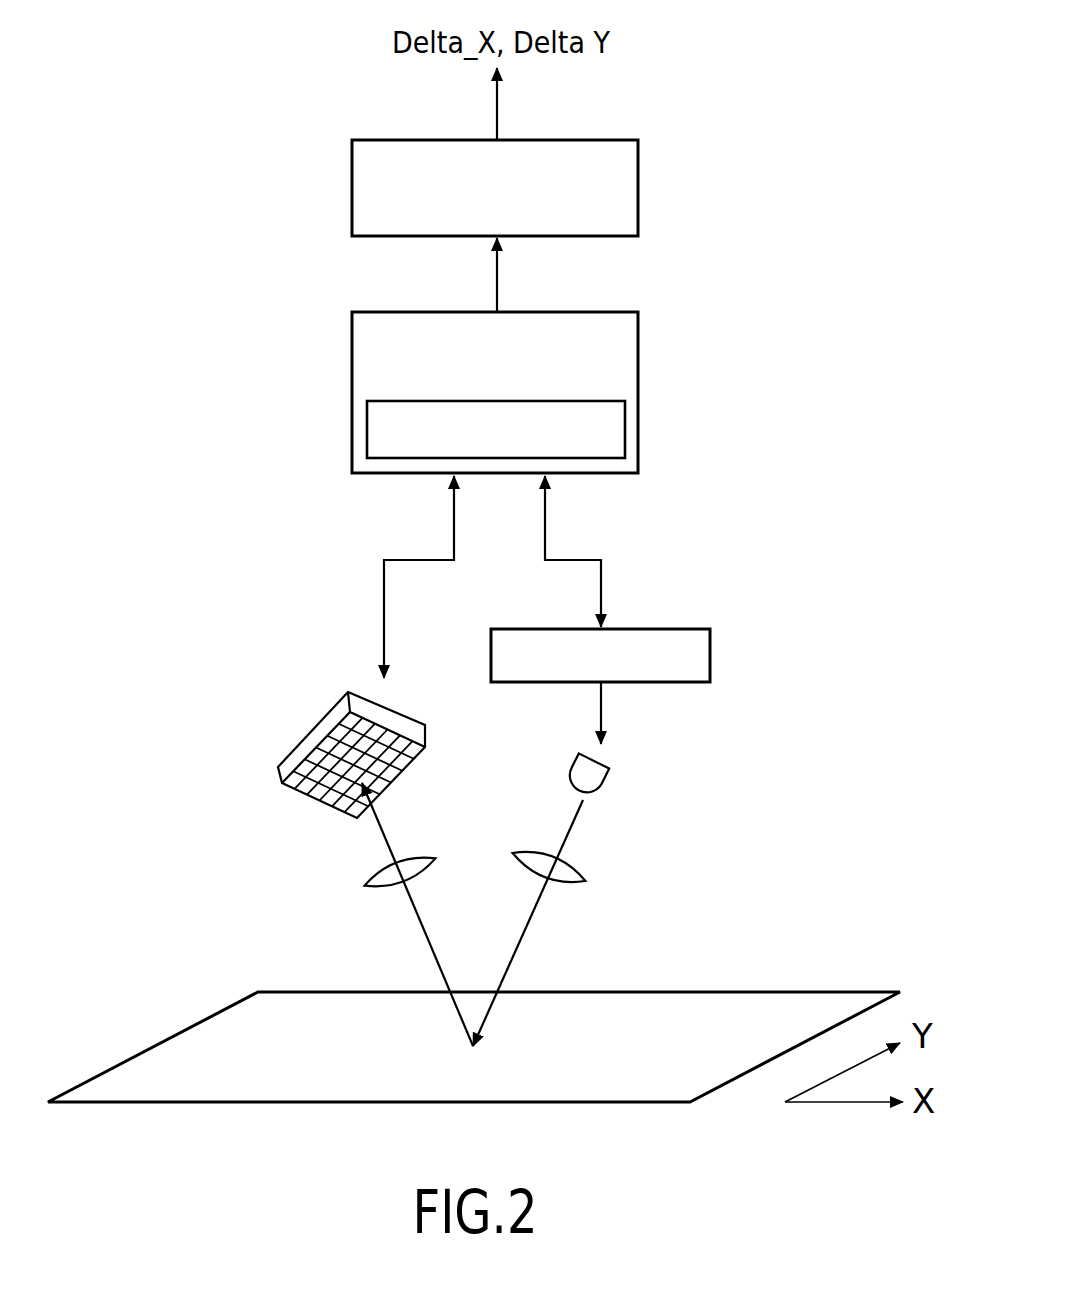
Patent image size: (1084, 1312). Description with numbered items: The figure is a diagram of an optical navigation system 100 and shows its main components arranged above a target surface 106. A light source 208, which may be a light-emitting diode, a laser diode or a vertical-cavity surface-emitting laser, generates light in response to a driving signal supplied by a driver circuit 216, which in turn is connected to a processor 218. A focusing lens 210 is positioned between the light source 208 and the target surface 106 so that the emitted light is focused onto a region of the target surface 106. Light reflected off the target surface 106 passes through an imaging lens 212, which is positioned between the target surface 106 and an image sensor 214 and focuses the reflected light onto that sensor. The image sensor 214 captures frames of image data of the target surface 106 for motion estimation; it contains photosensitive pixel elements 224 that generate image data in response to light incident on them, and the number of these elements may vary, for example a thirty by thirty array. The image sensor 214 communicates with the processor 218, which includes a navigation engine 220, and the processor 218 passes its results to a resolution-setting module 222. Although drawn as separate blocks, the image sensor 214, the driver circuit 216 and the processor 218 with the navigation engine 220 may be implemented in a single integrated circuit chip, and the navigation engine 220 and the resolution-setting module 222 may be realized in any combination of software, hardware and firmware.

The optical navigation system 100 is at (792, 47).
The target surface 106 is at (727, 991).
The light source 208 is at (612, 768).
The focusing lens 210 is at (568, 888).
The imaging lens 212 is at (380, 893).
The image sensor 214 is at (323, 716).
The driver circuit 216 is at (710, 655).
The processor 218 is at (638, 333).
The navigation engine 220 is at (625, 428).
The resolution-setting module 222 is at (638, 185).
The photosensitive pixel elements 224 is at (290, 785).